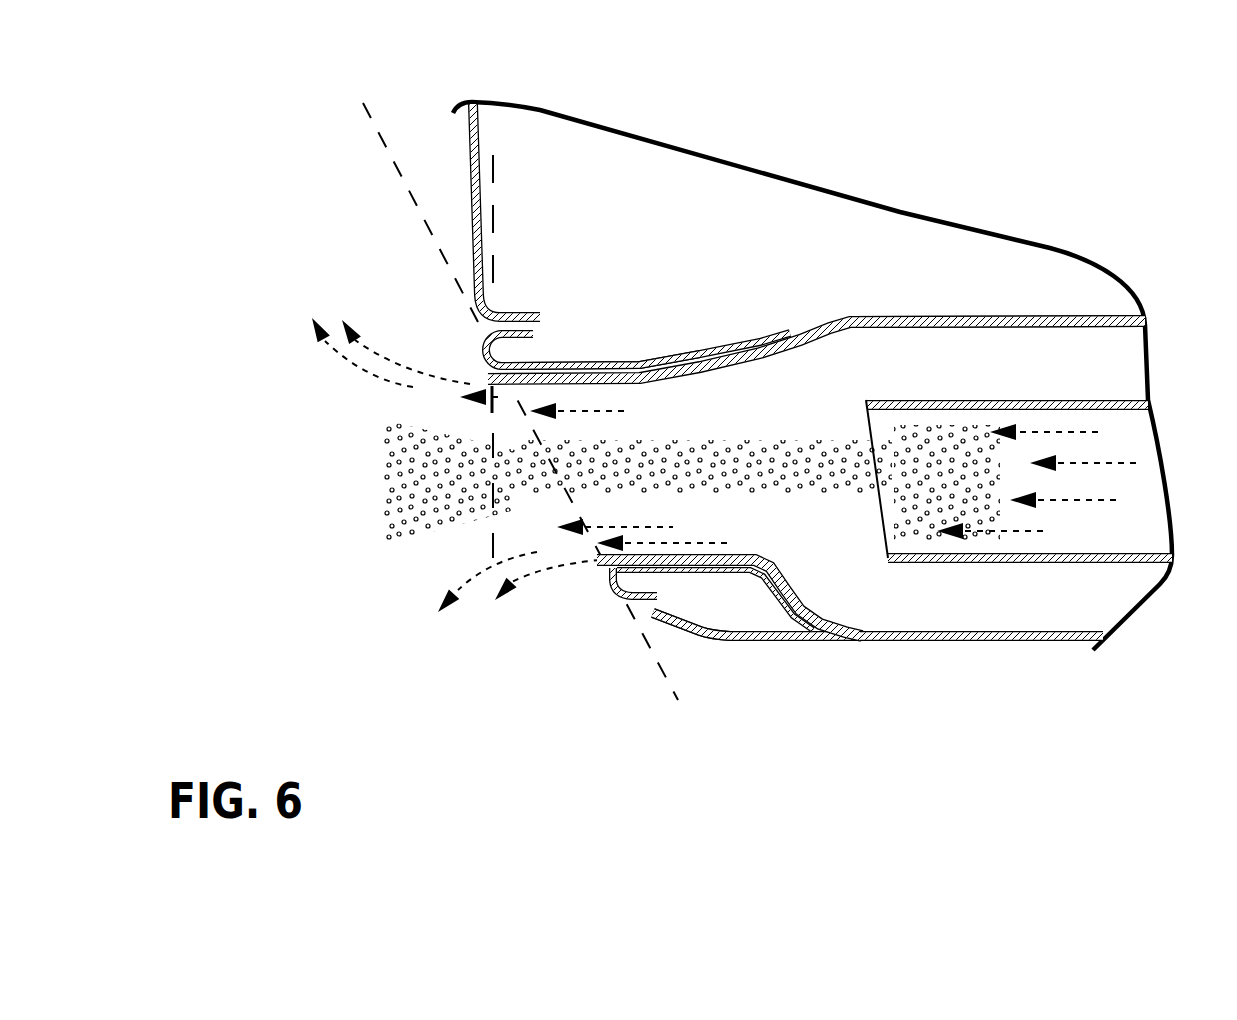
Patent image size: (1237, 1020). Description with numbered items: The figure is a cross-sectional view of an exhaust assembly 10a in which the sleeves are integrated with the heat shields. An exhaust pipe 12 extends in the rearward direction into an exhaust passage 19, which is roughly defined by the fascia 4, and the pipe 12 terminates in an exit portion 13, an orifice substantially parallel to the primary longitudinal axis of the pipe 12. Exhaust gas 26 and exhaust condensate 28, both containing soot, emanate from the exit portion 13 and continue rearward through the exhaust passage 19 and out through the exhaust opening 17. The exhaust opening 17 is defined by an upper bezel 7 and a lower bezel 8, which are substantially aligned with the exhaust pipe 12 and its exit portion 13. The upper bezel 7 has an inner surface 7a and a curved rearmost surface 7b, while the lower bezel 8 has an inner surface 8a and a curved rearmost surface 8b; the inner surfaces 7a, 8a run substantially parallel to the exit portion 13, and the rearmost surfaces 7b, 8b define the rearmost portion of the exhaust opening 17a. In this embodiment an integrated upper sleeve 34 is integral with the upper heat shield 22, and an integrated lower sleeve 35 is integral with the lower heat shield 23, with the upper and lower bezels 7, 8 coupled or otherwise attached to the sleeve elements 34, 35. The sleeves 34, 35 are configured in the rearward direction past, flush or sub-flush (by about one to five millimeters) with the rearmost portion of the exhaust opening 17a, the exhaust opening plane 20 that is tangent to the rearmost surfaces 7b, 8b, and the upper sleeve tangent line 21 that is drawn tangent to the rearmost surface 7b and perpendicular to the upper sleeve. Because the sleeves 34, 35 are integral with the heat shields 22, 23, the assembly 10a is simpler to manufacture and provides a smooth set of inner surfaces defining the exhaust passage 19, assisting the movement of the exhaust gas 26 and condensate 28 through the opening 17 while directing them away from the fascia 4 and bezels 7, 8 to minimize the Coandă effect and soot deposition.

The fascia 4 is at (467, 157).
The upper bezel 7 is at (522, 366).
The inner surface of upper bezel 7a is at (578, 372).
The rearmost surface of upper bezel 7b is at (490, 336).
The lower bezel 8 is at (652, 612).
The inner surface of lower bezel 8a is at (705, 575).
The rearmost surface of lower bezel 8b is at (607, 574).
The exhaust assembly 10a is at (1147, 648).
The exhaust pipe 12 is at (1090, 400).
The exit portion 13 is at (863, 447).
The exhaust opening 17 is at (680, 431).
The rearmost portion of exhaust opening 17a is at (510, 420).
The exhaust passage 19 is at (910, 614).
The exhaust opening plane 20 is at (659, 668).
The upper sleeve tangent line 21 is at (490, 147).
The upper heat shield 22 is at (863, 316).
The lower heat shield 23 is at (987, 641).
The exhaust gas 26 is at (418, 372).
The exhaust condensate 28 is at (938, 460).
The integrated upper sleeve 34 is at (623, 368).
The integrated lower sleeve 35 is at (603, 557).